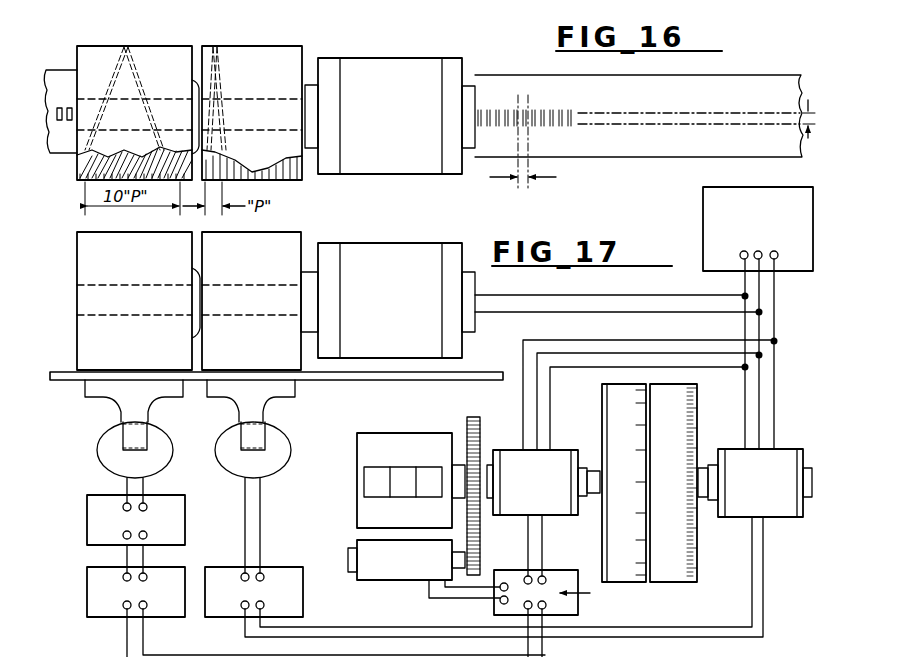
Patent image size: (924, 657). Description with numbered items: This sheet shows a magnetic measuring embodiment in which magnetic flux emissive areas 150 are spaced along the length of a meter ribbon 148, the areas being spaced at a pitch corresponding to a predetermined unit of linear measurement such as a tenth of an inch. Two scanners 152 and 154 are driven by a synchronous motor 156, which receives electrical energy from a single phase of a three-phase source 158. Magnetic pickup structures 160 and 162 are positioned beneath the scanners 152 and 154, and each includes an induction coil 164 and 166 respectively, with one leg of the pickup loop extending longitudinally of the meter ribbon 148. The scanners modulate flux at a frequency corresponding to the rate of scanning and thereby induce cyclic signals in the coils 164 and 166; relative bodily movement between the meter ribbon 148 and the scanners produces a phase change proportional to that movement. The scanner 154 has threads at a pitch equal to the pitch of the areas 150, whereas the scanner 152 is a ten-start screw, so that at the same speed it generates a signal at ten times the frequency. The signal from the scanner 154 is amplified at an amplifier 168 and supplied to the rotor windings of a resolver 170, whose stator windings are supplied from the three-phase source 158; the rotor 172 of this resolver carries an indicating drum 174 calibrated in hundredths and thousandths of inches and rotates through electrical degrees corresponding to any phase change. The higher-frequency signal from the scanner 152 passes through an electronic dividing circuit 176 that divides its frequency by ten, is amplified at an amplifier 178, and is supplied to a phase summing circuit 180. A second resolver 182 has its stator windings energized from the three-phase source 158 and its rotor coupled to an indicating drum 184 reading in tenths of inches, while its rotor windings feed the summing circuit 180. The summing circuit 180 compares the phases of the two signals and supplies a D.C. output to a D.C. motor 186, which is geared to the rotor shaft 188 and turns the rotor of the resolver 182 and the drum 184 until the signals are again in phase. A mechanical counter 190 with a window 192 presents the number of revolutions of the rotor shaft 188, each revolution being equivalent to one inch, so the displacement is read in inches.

In FIG. 16, the meter ribbon 148 is at (679, 148).
In FIG. 17, the meter ribbon 148 is at (476, 371).
In FIG. 16, the magnetized areas 150 is at (522, 105).
In FIG. 16, the scanner 152 is at (170, 77).
In FIG. 17, the scanner 152 is at (138, 264).
In FIG. 16, the scanner 154 is at (268, 77).
In FIG. 17, the scanner 154 is at (262, 264).
In FIG. 16, the synchronous motor 156 is at (408, 47).
In FIG. 17, the synchronous motor 156 is at (408, 272).
In FIG. 17, the three-phase source 158 is at (703, 204).
In FIG. 17, the magnetic pickup structure 160 is at (102, 392).
In FIG. 17, the magnetic pickup structure 162 is at (236, 392).
In FIG. 17, the induction coil 164 is at (100, 455).
In FIG. 17, the induction coil 166 is at (222, 458).
In FIG. 17, the amplifier 168 is at (219, 567).
In FIG. 17, the resolver 170 is at (781, 460).
In FIG. 17, the rotor 172 is at (714, 465).
In FIG. 17, the indicating drum 174 is at (697, 398).
In FIG. 17, the electronic dividing circuit 176 is at (87, 521).
In FIG. 17, the amplifier 178 is at (87, 592).
In FIG. 17, the phase summing circuit 180 is at (554, 578).
In FIG. 17, the second resolver 182 is at (559, 457).
In FIG. 17, the indicating drum 184 is at (602, 411).
In FIG. 17, the D.C. motor 186 is at (398, 566).
In FIG. 17, the rotor shaft 188 is at (482, 492).
In FIG. 17, the mechanical counter 190 is at (366, 511).
In FIG. 17, the window 192 is at (392, 470).